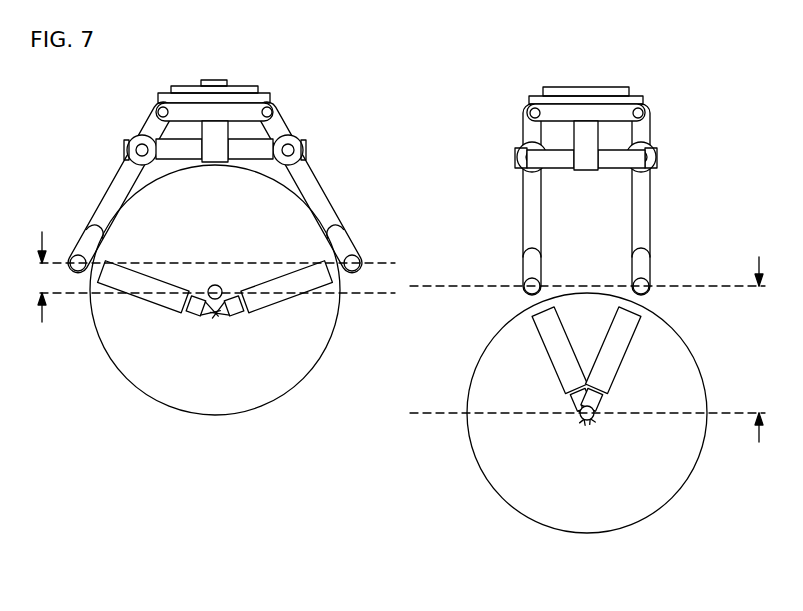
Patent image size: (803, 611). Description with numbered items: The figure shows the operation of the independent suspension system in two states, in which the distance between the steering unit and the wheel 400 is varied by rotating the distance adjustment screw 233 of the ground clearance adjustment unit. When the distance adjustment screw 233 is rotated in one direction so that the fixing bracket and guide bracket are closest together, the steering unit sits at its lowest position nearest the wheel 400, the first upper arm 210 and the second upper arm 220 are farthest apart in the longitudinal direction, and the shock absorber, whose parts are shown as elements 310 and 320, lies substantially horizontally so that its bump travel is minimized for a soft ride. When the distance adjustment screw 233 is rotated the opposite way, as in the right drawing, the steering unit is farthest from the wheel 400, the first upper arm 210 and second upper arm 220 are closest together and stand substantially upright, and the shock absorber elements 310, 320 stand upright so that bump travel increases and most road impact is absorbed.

The first upper arm 210 is at (305, 182).
The second upper arm 220 is at (113, 190).
The distance adjustment screw 233 is at (562, 160).
The first gripping finger 310 is at (268, 298).
The second gripping finger 320 is at (158, 308).
The wheel 400 is at (247, 387).